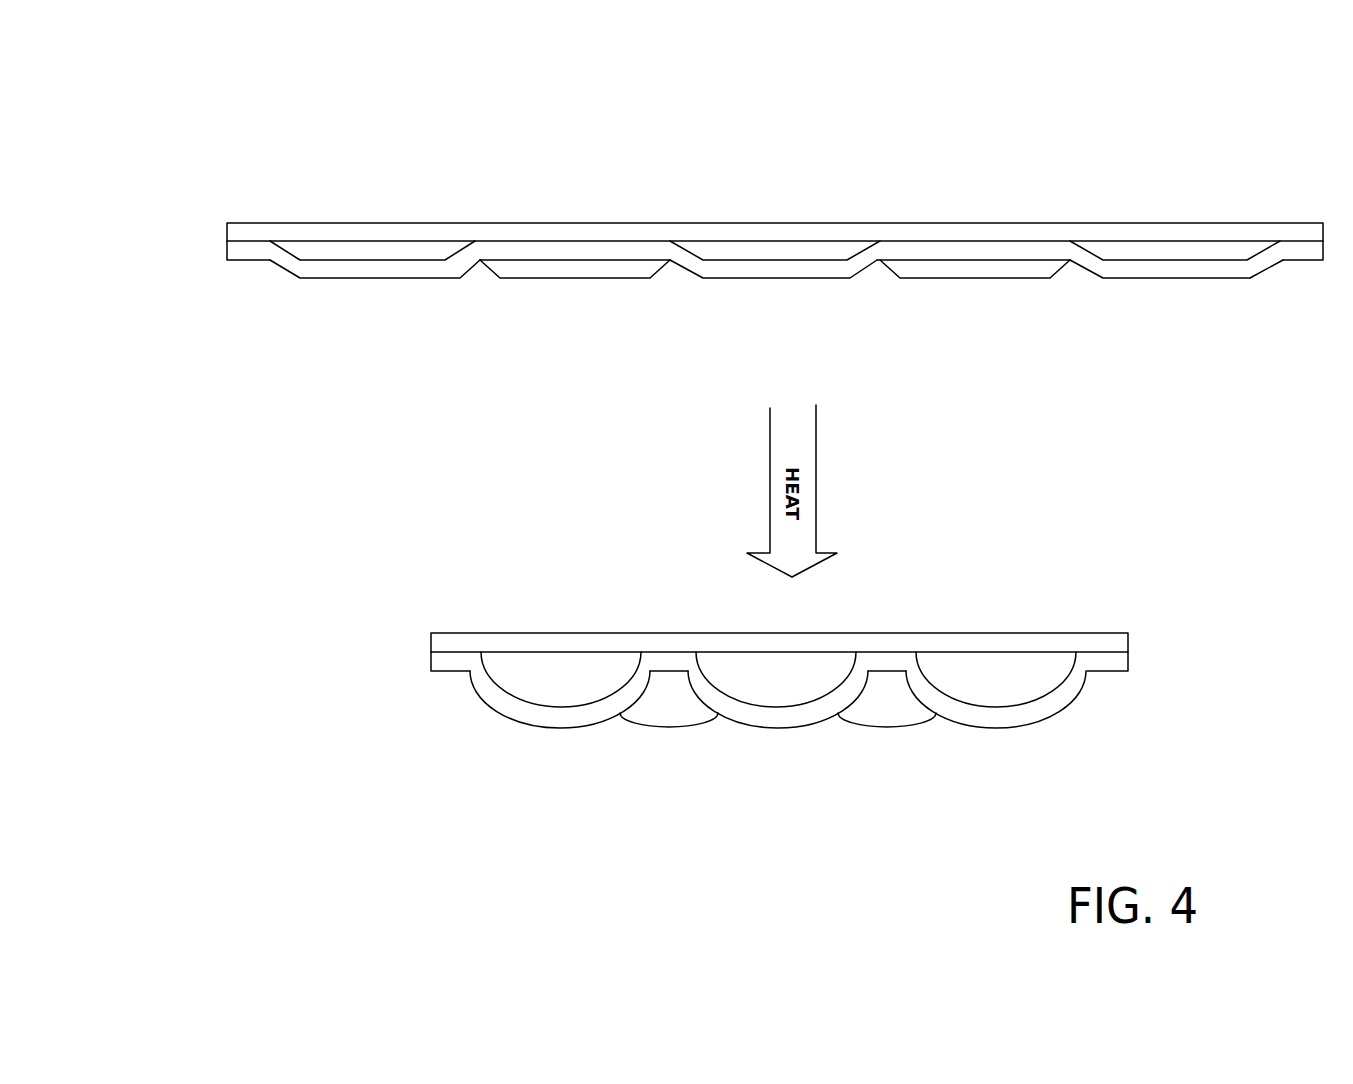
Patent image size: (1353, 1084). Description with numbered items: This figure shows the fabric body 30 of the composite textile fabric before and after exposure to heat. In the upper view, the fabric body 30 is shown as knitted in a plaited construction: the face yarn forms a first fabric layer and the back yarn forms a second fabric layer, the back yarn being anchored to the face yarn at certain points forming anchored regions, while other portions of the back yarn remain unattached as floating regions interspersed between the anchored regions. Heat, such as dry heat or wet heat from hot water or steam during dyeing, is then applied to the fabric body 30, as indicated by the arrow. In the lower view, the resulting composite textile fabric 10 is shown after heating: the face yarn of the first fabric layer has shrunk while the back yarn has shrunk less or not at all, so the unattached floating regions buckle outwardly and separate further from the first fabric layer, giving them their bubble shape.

The fabric body 30 is at (184, 148).
The composite textile fabric 10 is at (378, 583).